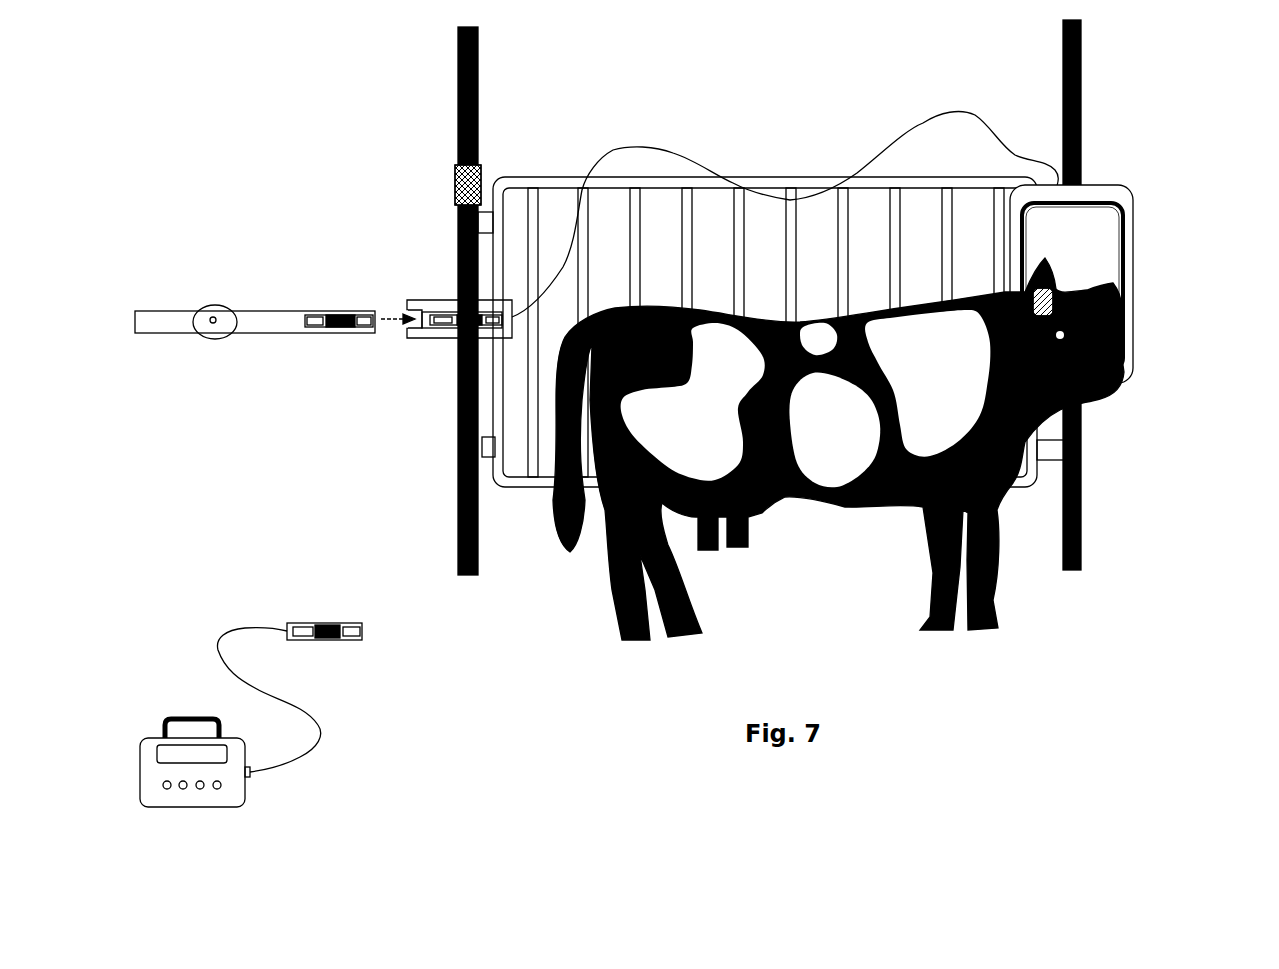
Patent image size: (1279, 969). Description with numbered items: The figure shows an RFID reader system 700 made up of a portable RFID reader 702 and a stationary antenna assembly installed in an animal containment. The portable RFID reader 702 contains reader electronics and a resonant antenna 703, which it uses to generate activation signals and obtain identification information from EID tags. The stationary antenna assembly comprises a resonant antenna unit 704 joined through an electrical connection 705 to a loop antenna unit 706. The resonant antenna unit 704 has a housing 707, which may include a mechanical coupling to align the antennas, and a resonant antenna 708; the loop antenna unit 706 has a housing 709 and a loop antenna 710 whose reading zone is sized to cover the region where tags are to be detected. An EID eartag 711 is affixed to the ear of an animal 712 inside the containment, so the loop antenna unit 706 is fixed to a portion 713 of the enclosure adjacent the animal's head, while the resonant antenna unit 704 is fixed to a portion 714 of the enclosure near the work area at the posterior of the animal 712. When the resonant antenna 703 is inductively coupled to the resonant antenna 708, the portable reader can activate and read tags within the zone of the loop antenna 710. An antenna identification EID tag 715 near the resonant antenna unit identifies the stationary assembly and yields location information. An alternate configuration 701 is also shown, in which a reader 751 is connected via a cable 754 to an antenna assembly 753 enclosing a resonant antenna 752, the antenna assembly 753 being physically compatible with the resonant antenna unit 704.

The RFID reader system 700 is at (550, 655).
The alternate physical configuration of the portable reader 701 is at (345, 795).
The portable RFID reader 702 is at (273, 338).
The resonant antenna 703 is at (341, 332).
The resonant antenna unit 704 is at (432, 290).
The electrical connection 705 is at (890, 145).
The loop antenna unit 706 is at (1140, 197).
The housing 707 is at (407, 298).
The resonant antenna 708 is at (458, 332).
The housing 709 is at (1133, 223).
The loop antenna 710 is at (1093, 203).
The EID eartag 711 is at (1060, 297).
The animal 712 is at (1040, 452).
The portion of the enclosure 713 is at (1085, 115).
The portion of the enclosure 714 is at (450, 123).
The antenna identification EID tag 715 is at (450, 189).
The reader 751 is at (202, 815).
The resonant antenna 752 is at (330, 620).
The antenna assembly 753 is at (330, 643).
The cable 754 is at (218, 627).